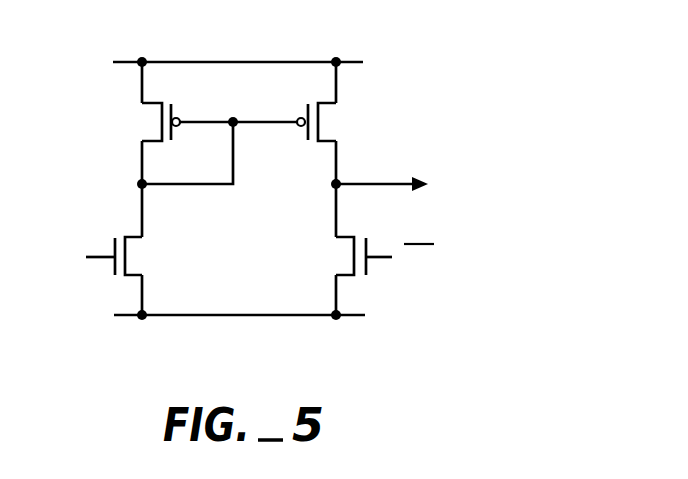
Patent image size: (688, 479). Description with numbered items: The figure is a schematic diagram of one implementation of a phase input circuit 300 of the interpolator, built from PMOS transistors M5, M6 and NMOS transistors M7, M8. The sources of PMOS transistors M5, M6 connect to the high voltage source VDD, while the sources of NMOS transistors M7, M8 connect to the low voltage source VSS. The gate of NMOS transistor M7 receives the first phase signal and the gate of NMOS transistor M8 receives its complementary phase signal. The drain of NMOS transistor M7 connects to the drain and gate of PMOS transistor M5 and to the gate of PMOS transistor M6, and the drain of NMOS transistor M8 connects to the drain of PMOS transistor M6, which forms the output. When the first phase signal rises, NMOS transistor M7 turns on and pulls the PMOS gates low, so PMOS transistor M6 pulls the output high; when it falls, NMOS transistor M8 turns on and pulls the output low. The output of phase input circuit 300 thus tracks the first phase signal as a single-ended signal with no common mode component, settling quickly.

The phase input circuit 300 is at (327, 180).
The PMOS transistor M5 is at (151, 122).
The PMOS transistor M6 is at (327, 122).
The NMOS transistor M7 is at (140, 256).
The NMOS transistor M8 is at (340, 256).